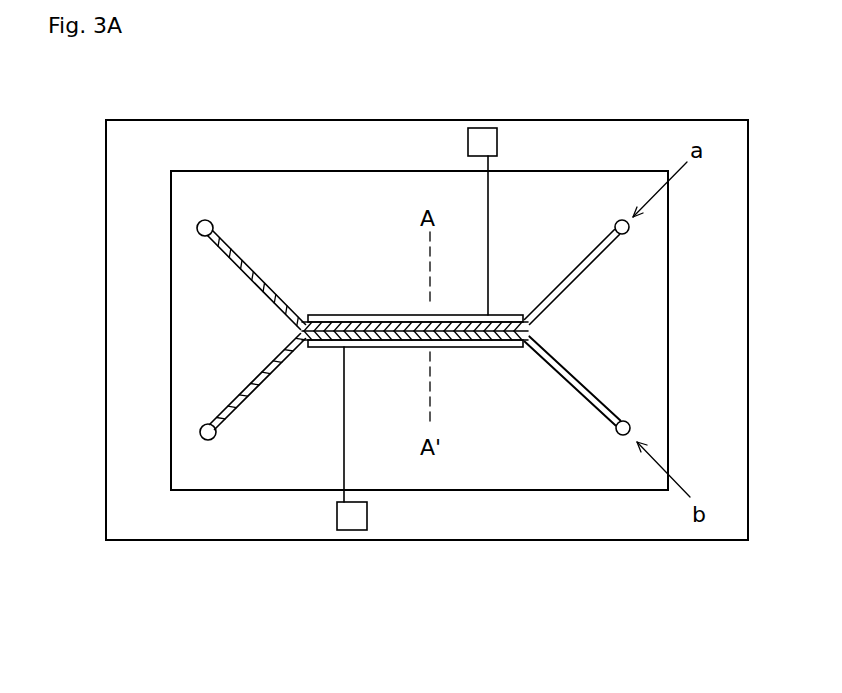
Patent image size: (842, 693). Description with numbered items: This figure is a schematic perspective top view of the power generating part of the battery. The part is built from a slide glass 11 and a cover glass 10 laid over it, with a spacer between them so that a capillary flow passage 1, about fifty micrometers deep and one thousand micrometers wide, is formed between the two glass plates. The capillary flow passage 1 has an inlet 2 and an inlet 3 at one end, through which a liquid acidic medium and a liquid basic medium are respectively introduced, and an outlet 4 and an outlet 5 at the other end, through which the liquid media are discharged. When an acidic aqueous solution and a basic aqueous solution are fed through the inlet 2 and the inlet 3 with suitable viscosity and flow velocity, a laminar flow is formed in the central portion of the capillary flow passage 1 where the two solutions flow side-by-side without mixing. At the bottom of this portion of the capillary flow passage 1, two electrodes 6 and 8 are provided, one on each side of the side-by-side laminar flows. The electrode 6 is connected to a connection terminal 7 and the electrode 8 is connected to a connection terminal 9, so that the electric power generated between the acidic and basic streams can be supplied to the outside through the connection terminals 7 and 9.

The capillary flow passage 1 is at (583, 380).
The inlet 2 is at (615, 225).
The inlet 3 is at (612, 428).
The outlet 4 is at (213, 226).
The outlet 5 is at (216, 431).
The electrode 6 is at (478, 347).
The connection terminal 7 is at (367, 514).
The electrode 8 is at (337, 315).
The connection terminal 9 is at (497, 140).
The cover glass 10 is at (190, 198).
The slide glass 11 is at (240, 525).